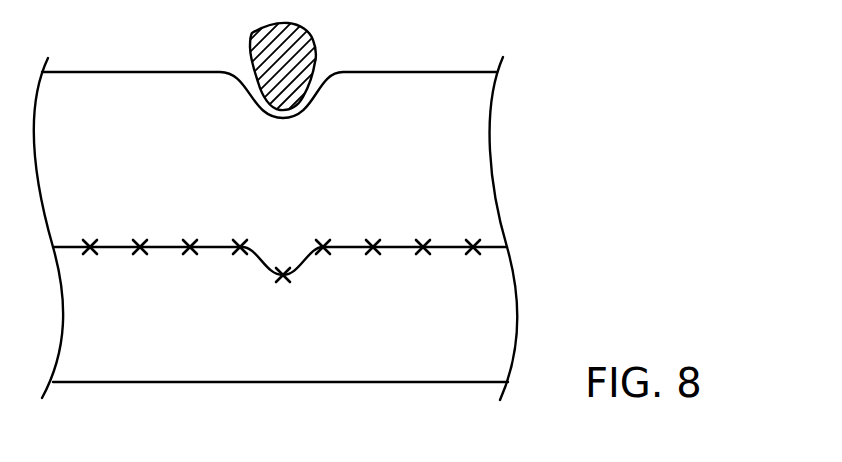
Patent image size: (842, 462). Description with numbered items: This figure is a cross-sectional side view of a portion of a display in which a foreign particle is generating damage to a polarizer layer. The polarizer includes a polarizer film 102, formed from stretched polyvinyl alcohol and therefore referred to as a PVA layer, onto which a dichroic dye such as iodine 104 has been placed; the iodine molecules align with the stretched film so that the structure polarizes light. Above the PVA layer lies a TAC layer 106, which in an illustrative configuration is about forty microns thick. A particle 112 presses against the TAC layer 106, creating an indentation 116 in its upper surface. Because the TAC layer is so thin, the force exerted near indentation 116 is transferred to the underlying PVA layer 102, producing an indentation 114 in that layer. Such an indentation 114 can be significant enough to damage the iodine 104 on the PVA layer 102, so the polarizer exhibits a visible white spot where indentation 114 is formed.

The polarizer film 102 is at (495, 317).
The iodine 104 is at (140, 252).
The TAC layer 106 is at (465, 153).
The particle 112 is at (305, 52).
The indentation 114 is at (318, 278).
The indentation 116 is at (236, 117).